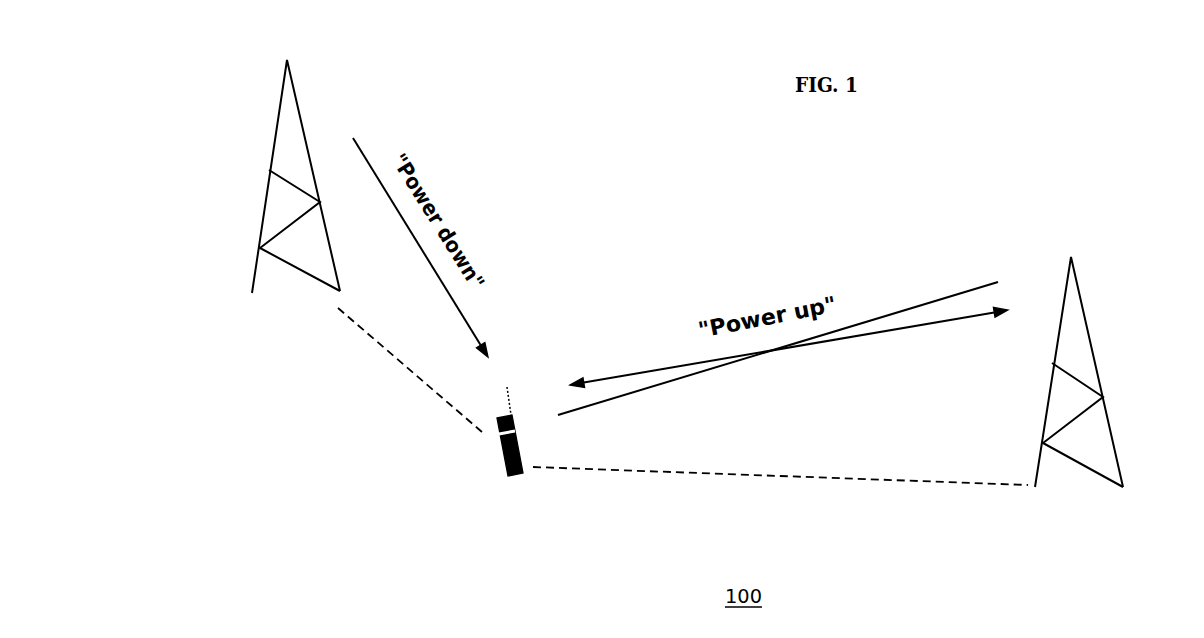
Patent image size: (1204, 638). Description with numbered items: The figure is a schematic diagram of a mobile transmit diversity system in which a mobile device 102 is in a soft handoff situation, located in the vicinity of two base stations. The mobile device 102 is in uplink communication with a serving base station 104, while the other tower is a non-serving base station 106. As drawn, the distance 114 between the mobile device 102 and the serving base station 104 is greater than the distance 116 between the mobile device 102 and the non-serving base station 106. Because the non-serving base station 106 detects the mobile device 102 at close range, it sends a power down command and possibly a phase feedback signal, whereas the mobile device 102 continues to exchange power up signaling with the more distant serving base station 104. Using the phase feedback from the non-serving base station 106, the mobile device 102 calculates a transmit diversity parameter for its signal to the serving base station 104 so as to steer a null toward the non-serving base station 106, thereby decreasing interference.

The mobile device 102 is at (500, 468).
The serving base station 104 is at (1088, 317).
The non-serving base station 106 is at (270, 115).
The distance 114 is at (802, 482).
The distance 116 is at (428, 395).